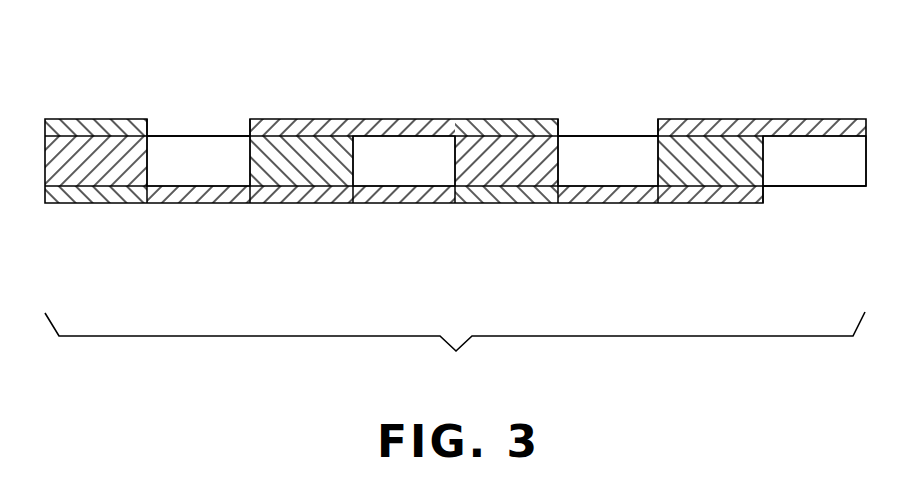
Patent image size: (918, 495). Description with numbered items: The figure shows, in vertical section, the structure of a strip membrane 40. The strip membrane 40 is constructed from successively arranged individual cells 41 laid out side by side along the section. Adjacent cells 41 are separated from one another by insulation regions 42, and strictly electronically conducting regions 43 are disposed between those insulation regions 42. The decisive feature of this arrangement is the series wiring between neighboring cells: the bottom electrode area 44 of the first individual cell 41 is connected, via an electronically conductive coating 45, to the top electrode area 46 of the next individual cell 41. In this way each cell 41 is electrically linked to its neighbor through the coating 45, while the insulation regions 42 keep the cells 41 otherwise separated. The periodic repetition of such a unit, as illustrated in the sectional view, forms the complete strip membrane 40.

The strip membrane 40 is at (455, 253).
The individual cell 41 is at (73, 155).
The insulation region 42 is at (175, 157).
The electronically conducting region 43 is at (288, 165).
The bottom electrode area 44 is at (87, 195).
The electronically conductive coating 45 is at (202, 190).
The top electrode area 46 is at (502, 128).